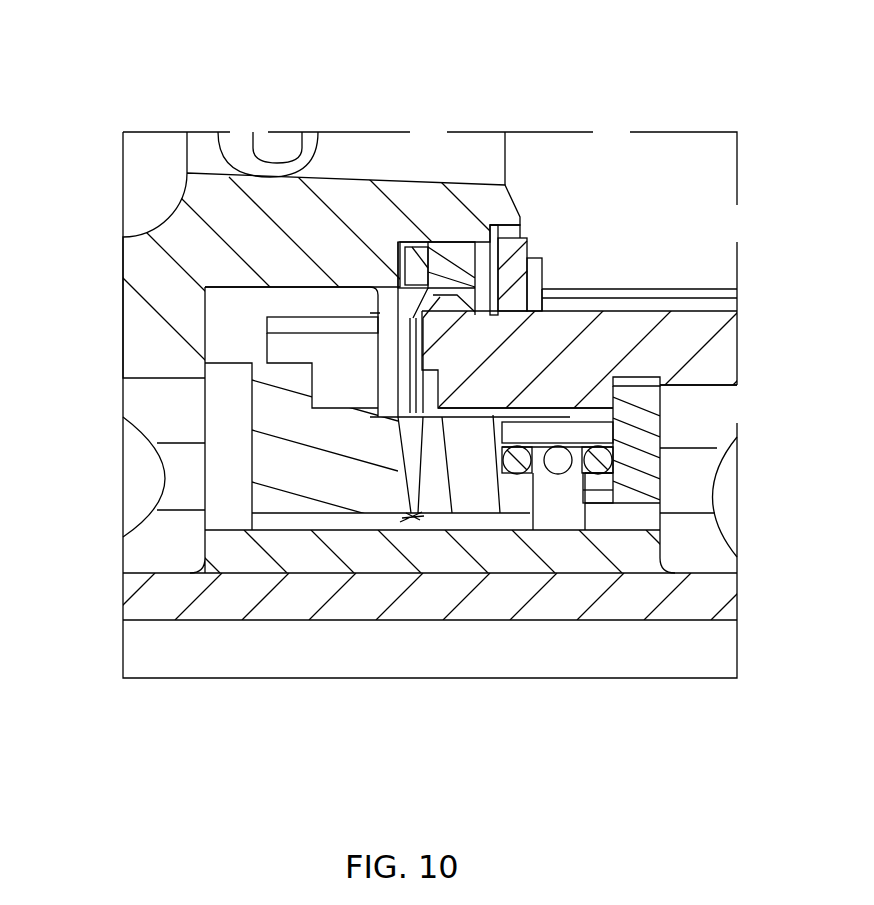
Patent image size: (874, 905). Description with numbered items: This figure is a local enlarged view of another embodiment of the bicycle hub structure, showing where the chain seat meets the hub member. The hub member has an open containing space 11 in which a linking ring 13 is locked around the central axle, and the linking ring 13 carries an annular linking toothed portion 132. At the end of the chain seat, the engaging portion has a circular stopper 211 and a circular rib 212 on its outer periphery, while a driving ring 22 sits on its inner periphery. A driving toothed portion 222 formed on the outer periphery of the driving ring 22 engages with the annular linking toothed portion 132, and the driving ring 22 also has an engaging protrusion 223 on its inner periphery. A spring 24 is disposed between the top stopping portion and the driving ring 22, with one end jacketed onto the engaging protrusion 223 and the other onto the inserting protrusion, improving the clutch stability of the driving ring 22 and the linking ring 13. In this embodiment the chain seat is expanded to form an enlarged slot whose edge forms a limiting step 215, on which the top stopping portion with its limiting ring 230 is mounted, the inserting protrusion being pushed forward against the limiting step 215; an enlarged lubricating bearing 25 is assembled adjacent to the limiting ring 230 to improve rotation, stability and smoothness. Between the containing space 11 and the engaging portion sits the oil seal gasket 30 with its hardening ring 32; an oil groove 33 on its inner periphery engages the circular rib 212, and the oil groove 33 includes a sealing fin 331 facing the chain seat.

The containing space 11 is at (336, 262).
The hardening ring 32 is at (410, 242).
The oil seal gasket 30 is at (467, 258).
The circular stopper 211 is at (535, 255).
The oil groove 33 is at (498, 298).
The circular rib 212 is at (497, 307).
The limiting ring 230 is at (640, 383).
The limiting step 215 is at (660, 397).
The lubricating bearing 25 is at (710, 555).
The spring 24 is at (557, 492).
The engaging protrusion 223 is at (517, 497).
The driving ring 22 is at (480, 493).
The driving toothed portion 222 is at (427, 500).
The annular linking toothed portion 132 is at (412, 520).
The linking ring 13 is at (288, 472).
The sealing fin 331 is at (378, 316).